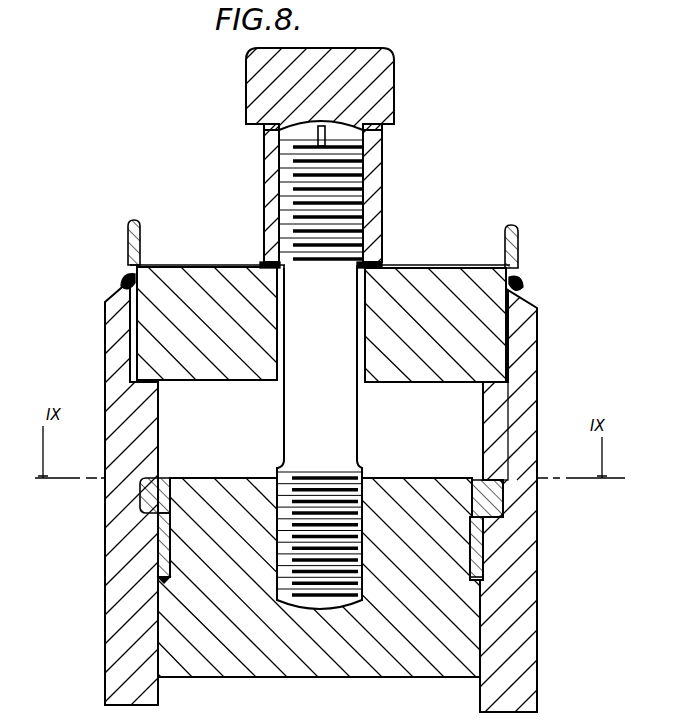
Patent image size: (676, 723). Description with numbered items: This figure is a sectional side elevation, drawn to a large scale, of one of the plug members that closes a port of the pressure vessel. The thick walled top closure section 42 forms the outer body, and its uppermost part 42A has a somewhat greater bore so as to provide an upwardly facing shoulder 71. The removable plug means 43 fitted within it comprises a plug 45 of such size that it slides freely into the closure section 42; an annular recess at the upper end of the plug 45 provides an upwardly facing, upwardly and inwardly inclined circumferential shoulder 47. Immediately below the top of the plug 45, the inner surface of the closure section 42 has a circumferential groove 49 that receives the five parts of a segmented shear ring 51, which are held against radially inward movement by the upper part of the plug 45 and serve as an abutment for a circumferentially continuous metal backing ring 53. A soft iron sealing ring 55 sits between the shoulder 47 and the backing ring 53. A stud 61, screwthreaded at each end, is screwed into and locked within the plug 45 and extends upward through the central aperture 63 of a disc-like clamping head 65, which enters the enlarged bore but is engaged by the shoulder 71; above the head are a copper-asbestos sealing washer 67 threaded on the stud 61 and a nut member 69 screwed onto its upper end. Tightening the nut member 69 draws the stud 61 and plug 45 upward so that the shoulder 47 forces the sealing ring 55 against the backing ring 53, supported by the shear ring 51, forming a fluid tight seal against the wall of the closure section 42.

The top closure section 42 is at (512, 612).
The uppermost part of closure section 42A is at (518, 320).
The plug means 43 is at (337, 212).
The plug 45 is at (448, 640).
The circumferential shoulder 47 is at (164, 582).
The circumferential groove 49 is at (141, 490).
The segmented shear ring 51 is at (143, 504).
The backing ring 53 is at (477, 540).
The sealing ring 55 is at (475, 571).
The stud 61 is at (335, 424).
The central aperture 63 is at (383, 290).
The clamping head 65 is at (225, 303).
The sealing washer 67 is at (382, 265).
The nut member 69 is at (312, 62).
The upwardly facing shoulder 71 is at (505, 388).